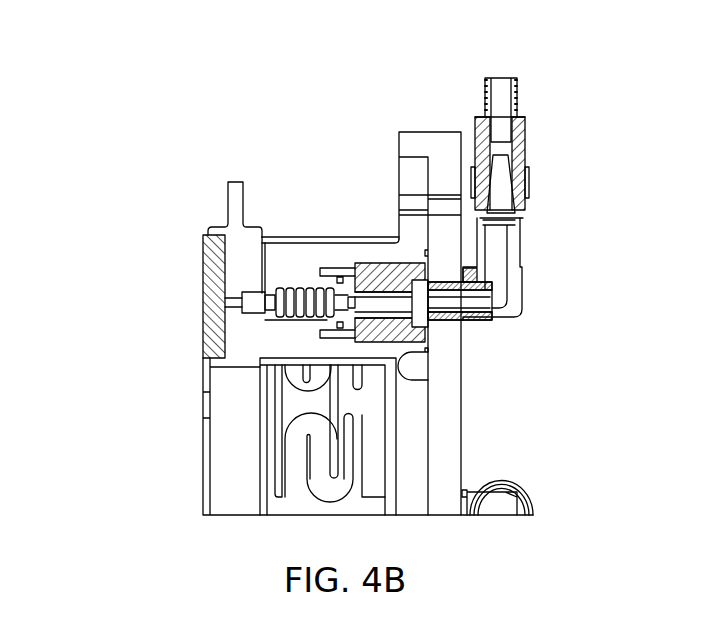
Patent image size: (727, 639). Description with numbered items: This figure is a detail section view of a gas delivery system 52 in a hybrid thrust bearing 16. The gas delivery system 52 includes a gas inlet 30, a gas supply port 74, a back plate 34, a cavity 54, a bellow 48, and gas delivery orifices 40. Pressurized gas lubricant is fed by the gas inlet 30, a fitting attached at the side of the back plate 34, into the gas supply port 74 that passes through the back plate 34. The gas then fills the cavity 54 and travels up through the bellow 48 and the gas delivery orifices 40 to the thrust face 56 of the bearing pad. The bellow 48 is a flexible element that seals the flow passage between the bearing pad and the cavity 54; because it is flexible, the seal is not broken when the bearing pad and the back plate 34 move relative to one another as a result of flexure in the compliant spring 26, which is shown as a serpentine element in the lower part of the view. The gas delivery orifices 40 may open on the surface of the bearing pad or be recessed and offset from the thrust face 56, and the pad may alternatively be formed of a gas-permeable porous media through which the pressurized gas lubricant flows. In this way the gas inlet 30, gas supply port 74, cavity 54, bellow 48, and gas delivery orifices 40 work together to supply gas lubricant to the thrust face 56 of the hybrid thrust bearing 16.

The hybrid thrust bearing 16 is at (155, 67).
The gas delivery system 52 is at (190, 211).
The thrust face 56 is at (203, 260).
The gas delivery orifices 40 is at (203, 292).
The bellow 48 is at (300, 290).
The cavity 54 is at (395, 308).
The back plate 34 is at (455, 346).
The gas inlet 30 is at (523, 275).
The gas supply port 74 is at (458, 318).
The compliant spring 26 is at (308, 455).